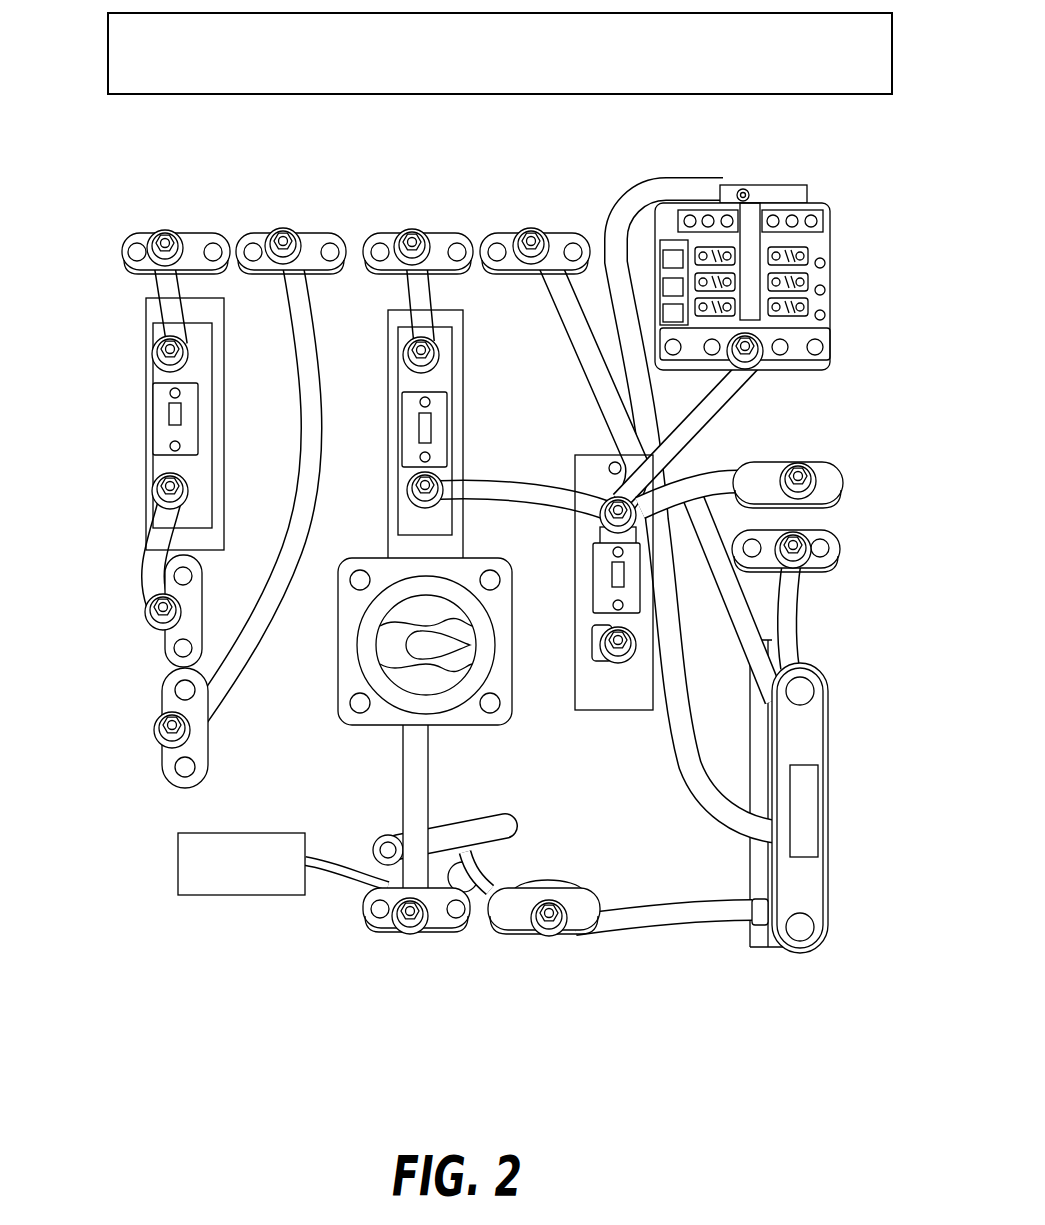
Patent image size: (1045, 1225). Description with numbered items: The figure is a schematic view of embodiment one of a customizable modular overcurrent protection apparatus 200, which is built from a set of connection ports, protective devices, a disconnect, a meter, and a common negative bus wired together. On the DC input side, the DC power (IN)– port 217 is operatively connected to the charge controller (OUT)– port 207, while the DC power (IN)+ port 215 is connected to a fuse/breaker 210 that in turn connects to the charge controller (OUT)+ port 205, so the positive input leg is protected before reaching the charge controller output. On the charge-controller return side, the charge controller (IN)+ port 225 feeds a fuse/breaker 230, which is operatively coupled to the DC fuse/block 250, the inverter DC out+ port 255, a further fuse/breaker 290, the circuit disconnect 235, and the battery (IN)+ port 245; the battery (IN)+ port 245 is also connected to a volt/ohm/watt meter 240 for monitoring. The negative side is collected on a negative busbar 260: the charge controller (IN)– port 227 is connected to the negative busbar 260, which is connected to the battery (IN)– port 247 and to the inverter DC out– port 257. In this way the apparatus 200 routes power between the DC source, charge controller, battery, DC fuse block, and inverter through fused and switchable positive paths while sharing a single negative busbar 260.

The customizable modular overcurrent protection apparatus 200 is at (488, 512).
The charge controller (OUT)+ port 205 is at (176, 204).
The charge controller (OUT)– port 207 is at (291, 202).
The fuse/breaker 210 is at (128, 424).
The DC power (IN)+ port 215 is at (129, 620).
The DC power (IN)– port 217 is at (134, 732).
The charge controller (IN)+ port 225 is at (414, 204).
The charge controller (IN)– port 227 is at (535, 204).
The fuse/breaker 230 is at (492, 435).
The circuit disconnect 235 is at (406, 736).
The volt/ohm/watt meter 240 is at (248, 903).
The battery (IN)+ port 245 is at (416, 950).
The battery (IN)– port 247 is at (544, 946).
The DC fuse/block 250 is at (757, 308).
The inverter DC out+ port 255 is at (838, 492).
The inverter DC out– port 257 is at (838, 569).
The negative busbar 260 is at (842, 808).
The fuse/breaker 290 is at (605, 610).